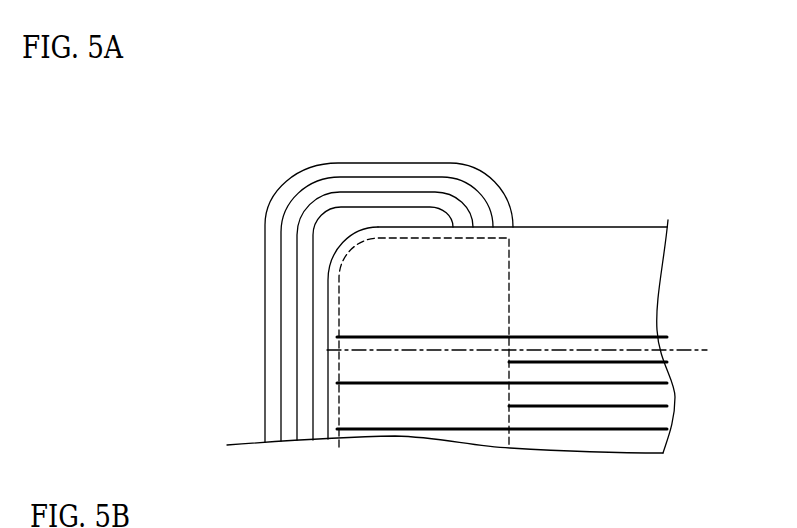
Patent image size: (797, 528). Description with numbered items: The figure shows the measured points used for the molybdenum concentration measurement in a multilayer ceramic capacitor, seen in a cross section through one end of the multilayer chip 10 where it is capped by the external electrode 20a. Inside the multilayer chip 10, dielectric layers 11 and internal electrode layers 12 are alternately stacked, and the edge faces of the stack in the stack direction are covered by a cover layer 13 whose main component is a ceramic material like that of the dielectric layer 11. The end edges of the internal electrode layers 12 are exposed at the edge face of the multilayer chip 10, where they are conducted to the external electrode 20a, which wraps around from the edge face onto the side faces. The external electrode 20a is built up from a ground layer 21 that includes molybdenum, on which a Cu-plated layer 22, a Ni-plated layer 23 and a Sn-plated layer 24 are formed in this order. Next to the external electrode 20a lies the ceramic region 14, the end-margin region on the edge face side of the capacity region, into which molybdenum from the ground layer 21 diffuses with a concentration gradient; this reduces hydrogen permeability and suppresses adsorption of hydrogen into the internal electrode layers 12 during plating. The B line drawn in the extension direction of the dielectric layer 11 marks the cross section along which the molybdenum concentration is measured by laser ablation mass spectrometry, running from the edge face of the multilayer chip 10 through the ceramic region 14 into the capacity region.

The multilayer chip 10 is at (650, 218).
The dielectric layer 11 is at (580, 370).
The internal electrode layer 12 is at (457, 430).
The cover layer 13 is at (598, 262).
The ceramic region 14 is at (403, 237).
The external electrode 20a is at (128, 114).
The ground layer 21 is at (320, 352).
The Cu-plated layer 22 is at (305, 292).
The Ni-plated layer 23 is at (288, 247).
The Sn-plated layer 24 is at (283, 213).
The B line B is at (527, 348).